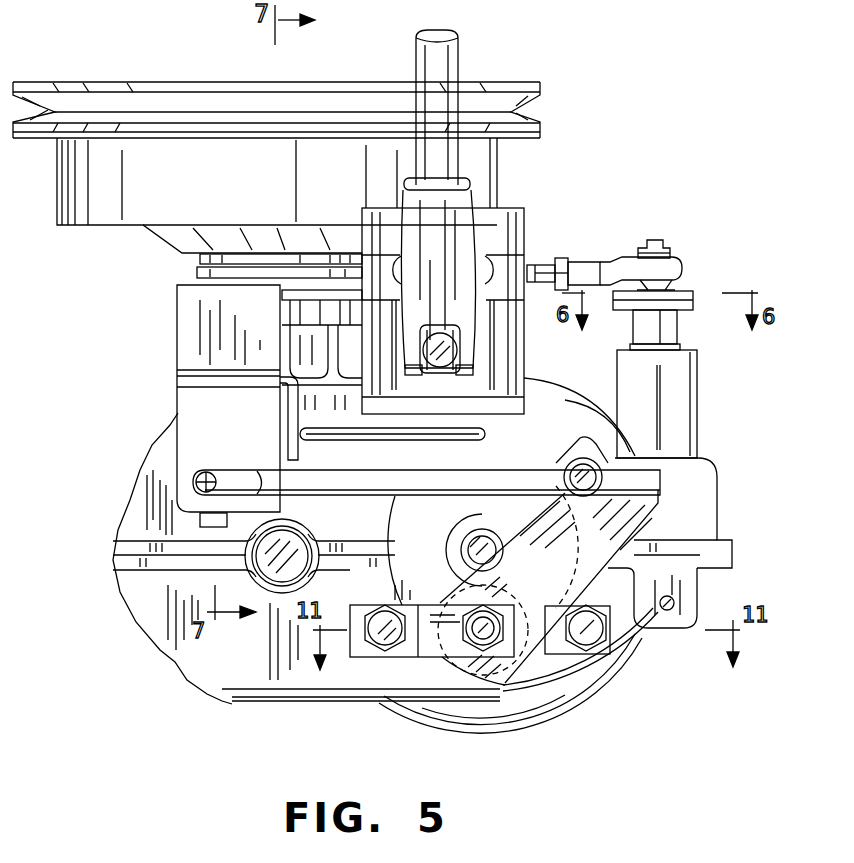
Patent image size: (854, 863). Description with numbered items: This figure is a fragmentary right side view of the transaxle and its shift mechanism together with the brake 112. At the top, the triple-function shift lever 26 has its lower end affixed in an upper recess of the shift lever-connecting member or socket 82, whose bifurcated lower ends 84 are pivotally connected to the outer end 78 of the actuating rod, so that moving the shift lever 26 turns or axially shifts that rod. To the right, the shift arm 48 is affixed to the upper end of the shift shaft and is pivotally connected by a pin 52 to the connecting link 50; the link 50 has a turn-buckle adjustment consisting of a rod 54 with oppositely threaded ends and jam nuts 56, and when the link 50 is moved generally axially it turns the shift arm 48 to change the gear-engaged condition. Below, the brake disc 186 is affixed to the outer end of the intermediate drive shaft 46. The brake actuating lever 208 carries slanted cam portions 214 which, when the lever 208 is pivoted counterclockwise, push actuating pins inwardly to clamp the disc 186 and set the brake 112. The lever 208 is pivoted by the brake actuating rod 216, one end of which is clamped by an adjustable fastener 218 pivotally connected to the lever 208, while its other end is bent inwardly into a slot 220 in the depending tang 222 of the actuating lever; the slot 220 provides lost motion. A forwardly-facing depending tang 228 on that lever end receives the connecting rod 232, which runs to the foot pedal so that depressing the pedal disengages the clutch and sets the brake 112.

The triple-function shift lever 26 is at (459, 55).
The shift lever-connecting member or socket 82 is at (478, 195).
The outer end of actuating rod 78 is at (440, 340).
The bifurcated lower ends 84 is at (456, 375).
The depending tang 222 is at (178, 478).
The forwardly-facing depending tang 228 is at (296, 450).
The connecting rod 232 is at (470, 446).
The brake actuating rod 216 is at (412, 480).
The slot 220 is at (214, 474).
The fastener 218 is at (603, 490).
The rod 54 is at (541, 282).
The jam nuts 56 is at (559, 258).
The connecting link 50 is at (586, 262).
The pin 52 is at (656, 240).
The shift arm 48 is at (682, 291).
The brake actuating lever 208 is at (646, 626).
The brake disc 186 is at (392, 525).
The intermediate drive shaft 46 is at (455, 560).
The brake 112 is at (538, 670).
The slanted cam portions 214 is at (600, 642).